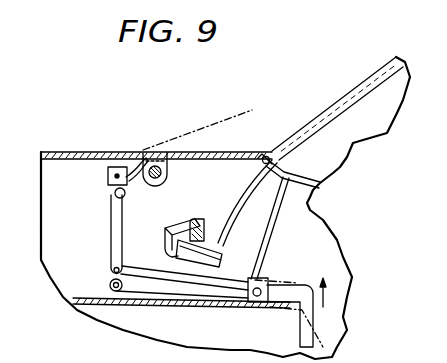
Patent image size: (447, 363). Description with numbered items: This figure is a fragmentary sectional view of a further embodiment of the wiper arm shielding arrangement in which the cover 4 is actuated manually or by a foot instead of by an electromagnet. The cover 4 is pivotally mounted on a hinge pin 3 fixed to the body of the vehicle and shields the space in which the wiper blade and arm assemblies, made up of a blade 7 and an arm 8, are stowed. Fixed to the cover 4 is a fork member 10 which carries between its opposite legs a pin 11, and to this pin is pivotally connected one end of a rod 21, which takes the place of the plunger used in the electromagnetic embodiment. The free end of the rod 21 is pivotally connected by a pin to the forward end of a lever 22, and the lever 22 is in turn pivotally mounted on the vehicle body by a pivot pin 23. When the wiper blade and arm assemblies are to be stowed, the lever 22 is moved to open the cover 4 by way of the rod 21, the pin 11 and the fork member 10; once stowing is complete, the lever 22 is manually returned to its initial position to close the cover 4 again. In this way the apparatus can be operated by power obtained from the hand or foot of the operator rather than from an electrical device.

The hinge pin 3 is at (155, 185).
The cover 4 is at (258, 152).
The wiper blade 7 is at (204, 234).
The wiper arm 8 is at (173, 227).
The fork member 10 is at (141, 154).
The pin 11 is at (109, 178).
The rod 21 is at (111, 238).
The lever 22 is at (288, 290).
The pivot pin 23 is at (254, 302).